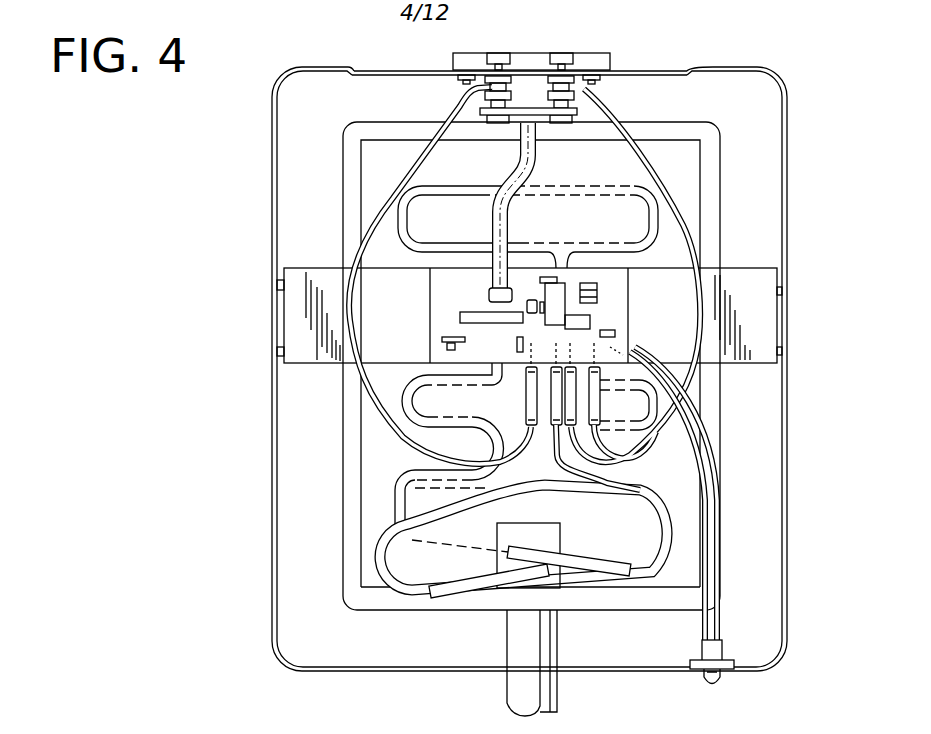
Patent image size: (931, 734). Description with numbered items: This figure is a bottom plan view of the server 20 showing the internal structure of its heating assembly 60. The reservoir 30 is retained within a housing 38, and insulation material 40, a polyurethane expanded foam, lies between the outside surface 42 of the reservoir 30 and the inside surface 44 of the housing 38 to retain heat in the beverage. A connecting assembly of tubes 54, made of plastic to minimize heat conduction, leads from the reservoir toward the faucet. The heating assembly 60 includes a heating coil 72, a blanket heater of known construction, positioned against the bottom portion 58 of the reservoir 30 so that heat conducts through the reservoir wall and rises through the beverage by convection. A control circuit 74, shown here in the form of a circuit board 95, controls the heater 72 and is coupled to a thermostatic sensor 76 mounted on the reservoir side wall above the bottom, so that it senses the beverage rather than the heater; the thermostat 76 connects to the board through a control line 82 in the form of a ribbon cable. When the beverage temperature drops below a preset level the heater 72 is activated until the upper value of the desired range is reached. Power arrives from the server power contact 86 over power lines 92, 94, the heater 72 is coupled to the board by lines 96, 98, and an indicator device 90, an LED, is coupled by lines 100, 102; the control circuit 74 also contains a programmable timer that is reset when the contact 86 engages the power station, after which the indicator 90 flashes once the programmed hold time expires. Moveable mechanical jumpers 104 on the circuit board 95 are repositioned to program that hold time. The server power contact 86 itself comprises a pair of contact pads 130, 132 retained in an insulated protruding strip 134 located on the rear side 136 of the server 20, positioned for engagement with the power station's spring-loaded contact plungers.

The server 20 is at (244, 321).
The reservoir 30 is at (338, 407).
The housing 38 is at (357, 672).
The insulation material 40 is at (770, 120).
The outside surface 42 is at (362, 610).
The inside surface 44 is at (346, 533).
The connecting assembly of tubes 54 is at (558, 690).
The bottom portion 58 is at (350, 572).
The heating assembly 60 is at (692, 190).
The heating coil 72 is at (373, 514).
The control circuit 74 is at (460, 293).
The thermostatic sensor 76 is at (490, 117).
The control line 82 is at (515, 185).
The server power contact 86 is at (616, 60).
The indicator device 90 is at (712, 688).
The power line 92 is at (400, 192).
The power line 94 is at (643, 158).
The circuit board 95 is at (628, 345).
The heater line 96 is at (404, 527).
The heater line 98 is at (667, 572).
The indicator line 100 is at (700, 607).
The indicator line 102 is at (710, 505).
The mechanical jumpers 104 is at (592, 318).
The contact pad 130 is at (493, 48).
The contact pad 132 is at (562, 52).
The insulated protruding strip 134 is at (458, 60).
The rear side 136 is at (663, 71).